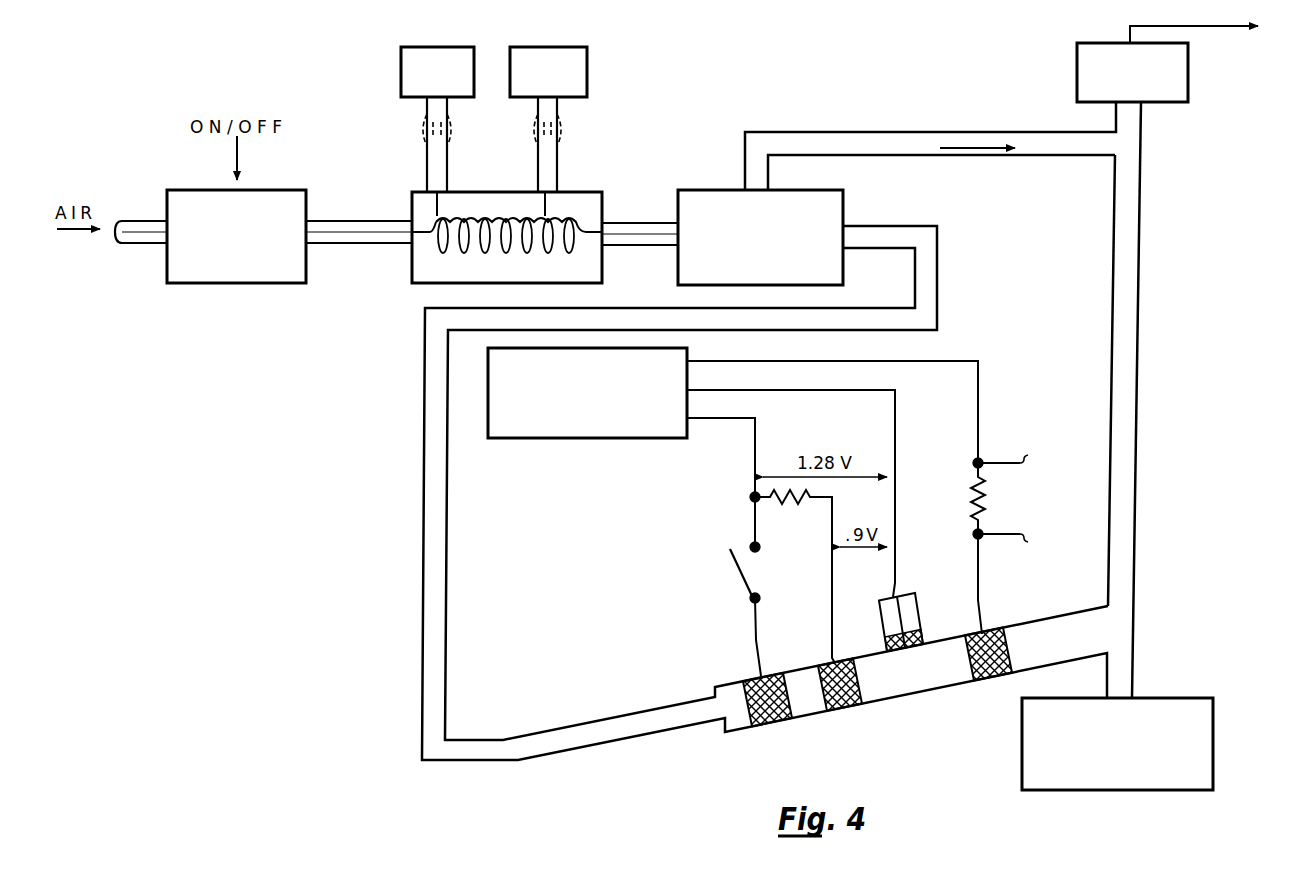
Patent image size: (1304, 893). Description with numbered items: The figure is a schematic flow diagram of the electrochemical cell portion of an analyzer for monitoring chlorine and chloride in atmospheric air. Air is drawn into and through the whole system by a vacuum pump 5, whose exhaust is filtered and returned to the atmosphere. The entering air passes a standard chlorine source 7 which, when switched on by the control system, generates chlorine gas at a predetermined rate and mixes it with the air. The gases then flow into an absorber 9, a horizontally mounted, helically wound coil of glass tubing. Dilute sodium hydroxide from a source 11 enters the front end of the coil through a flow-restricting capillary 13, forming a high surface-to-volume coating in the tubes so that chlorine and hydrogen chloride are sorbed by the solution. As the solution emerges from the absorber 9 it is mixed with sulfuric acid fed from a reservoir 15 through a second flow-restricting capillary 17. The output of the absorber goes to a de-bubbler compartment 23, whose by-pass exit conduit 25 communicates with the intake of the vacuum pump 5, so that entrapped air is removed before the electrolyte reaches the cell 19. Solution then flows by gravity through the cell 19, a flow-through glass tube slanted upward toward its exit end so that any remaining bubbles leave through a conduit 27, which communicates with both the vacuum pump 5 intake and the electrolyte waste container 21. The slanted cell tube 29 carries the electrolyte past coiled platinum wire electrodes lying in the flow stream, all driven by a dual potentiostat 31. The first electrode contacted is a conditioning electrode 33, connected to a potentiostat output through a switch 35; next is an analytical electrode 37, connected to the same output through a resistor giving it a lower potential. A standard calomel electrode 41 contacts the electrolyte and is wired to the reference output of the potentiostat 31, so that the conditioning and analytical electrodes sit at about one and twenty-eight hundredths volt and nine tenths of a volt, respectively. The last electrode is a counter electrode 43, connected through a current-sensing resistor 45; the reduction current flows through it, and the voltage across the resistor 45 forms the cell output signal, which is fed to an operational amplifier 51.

The vacuum pump 5 is at (1077, 80).
The standard chlorine source 7 is at (195, 283).
The absorber 9 is at (412, 201).
The source 11 is at (463, 46).
The flow-restricting capillary 13 is at (427, 132).
The reservoir 15 is at (519, 46).
The second flow-restricting capillary 17 is at (564, 131).
The cell 19 is at (728, 532).
The electrolyte waste container 21 is at (1213, 752).
The de-bubbler compartment 23 is at (843, 208).
The by-pass exit conduit 25 is at (745, 160).
The conduit 27 is at (1137, 355).
The electrochemical flow cell 29 is at (1025, 622).
The dual potentiostat 31 is at (530, 440).
The conditioning electrode 33 is at (781, 722).
The switch 35 is at (745, 575).
The analytical electrode 37 is at (838, 712).
The standard calomel electrode 41 is at (918, 597).
The counter electrode 43 is at (996, 676).
The current-sensing resistor 45 is at (975, 505).
The operational amplifier 51 is at (1023, 498).